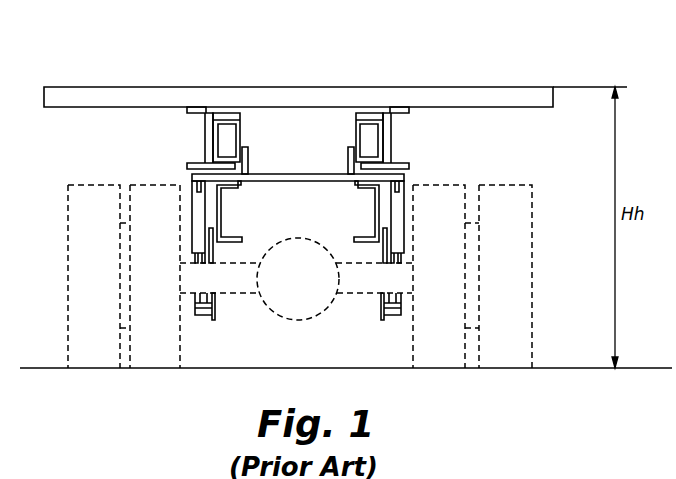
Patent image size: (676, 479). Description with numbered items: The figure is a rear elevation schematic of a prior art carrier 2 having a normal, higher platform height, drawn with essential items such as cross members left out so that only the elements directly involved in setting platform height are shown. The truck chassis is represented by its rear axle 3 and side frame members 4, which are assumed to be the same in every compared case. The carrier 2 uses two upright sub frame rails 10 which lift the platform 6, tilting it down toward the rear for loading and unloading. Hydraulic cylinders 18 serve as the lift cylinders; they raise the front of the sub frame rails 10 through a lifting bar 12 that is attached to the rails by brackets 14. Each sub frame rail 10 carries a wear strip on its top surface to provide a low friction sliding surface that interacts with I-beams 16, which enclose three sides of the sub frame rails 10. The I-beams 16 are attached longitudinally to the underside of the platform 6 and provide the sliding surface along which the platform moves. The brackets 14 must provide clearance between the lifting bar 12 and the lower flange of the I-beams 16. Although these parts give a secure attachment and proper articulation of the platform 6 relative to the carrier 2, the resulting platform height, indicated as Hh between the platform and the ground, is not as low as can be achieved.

The prior art carrier 2 is at (115, 68).
The rear axle 3 is at (301, 312).
The side frame members 4 is at (239, 233).
The platform 6 is at (159, 94).
The upright sub frame rails 10 is at (243, 133).
The lifting bar 12 is at (293, 183).
The brackets 14 is at (250, 163).
The I-beams 16 is at (186, 113).
The hydraulic cylinders 18 is at (193, 200).